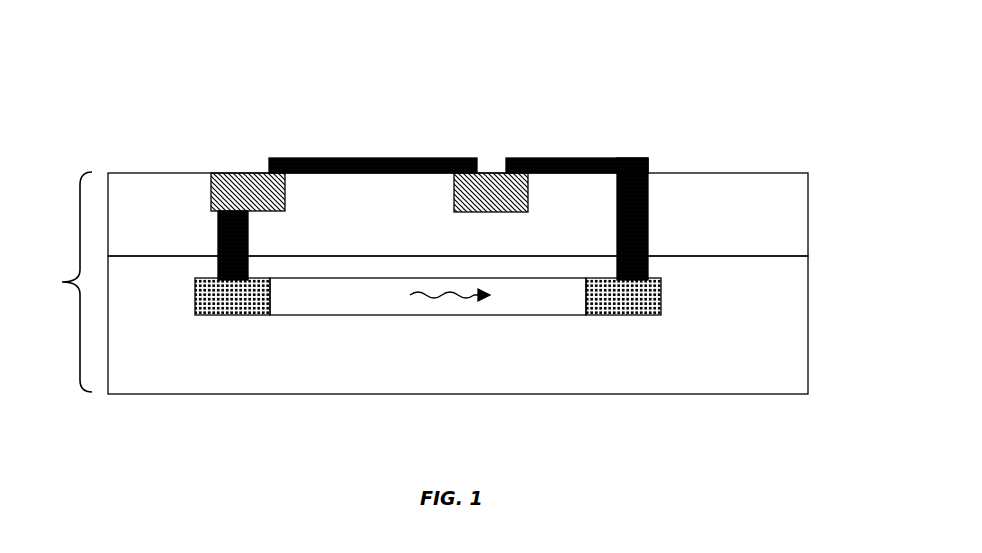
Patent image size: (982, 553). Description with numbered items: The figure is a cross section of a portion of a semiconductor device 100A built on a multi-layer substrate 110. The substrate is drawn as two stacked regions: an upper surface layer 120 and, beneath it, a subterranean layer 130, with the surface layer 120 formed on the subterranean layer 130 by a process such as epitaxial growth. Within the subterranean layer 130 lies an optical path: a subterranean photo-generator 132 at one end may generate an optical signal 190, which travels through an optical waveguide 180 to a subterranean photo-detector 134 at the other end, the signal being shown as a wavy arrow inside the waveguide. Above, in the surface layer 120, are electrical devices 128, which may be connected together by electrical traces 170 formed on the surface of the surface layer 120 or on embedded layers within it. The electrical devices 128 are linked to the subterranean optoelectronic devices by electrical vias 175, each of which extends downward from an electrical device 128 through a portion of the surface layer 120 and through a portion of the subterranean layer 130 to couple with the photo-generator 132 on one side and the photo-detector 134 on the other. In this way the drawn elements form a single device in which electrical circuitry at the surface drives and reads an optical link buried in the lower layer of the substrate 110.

The semiconductor device 100A is at (772, 48).
The multi-layer substrate 110 is at (78, 178).
The surface layer 120 is at (810, 213).
The electrical devices 128 is at (262, 195).
The subterranean layer 130 is at (810, 365).
The subterranean photo-generator 132 is at (232, 302).
The subterranean photo-detector 134 is at (623, 302).
The electrical traces 170 is at (552, 158).
The electrical vias 175 is at (217, 233).
The optical waveguide 180 is at (345, 300).
The optical signal 190 is at (463, 300).